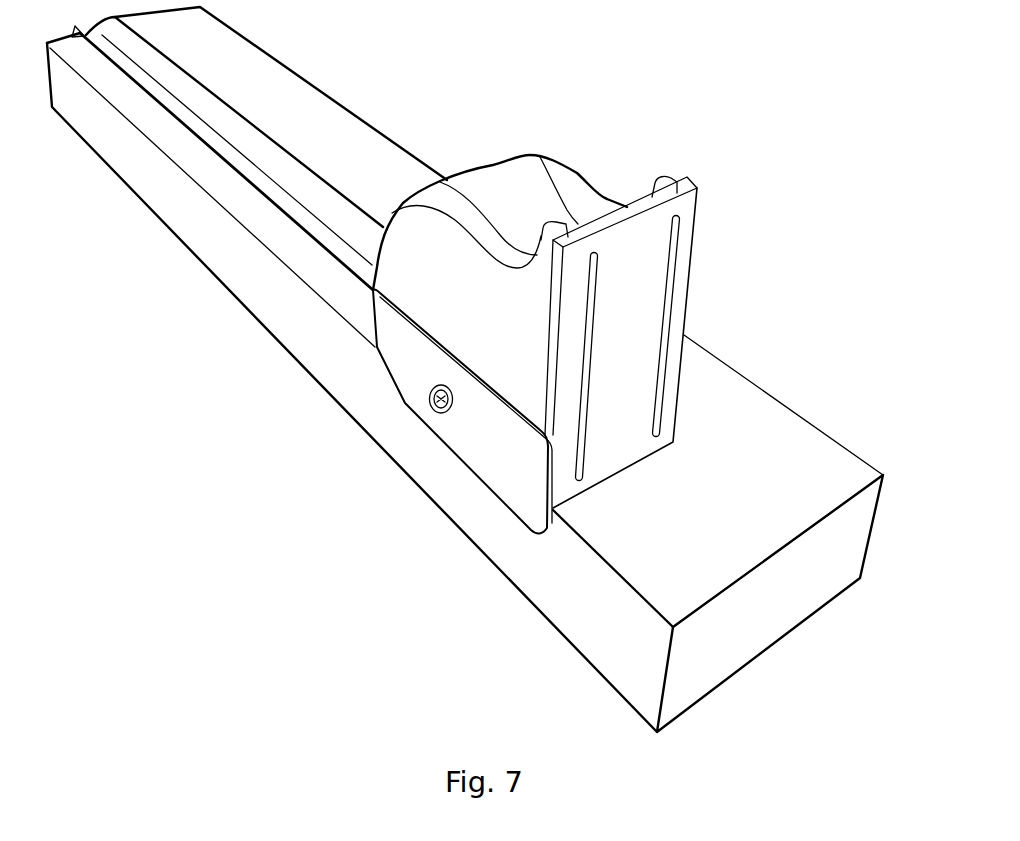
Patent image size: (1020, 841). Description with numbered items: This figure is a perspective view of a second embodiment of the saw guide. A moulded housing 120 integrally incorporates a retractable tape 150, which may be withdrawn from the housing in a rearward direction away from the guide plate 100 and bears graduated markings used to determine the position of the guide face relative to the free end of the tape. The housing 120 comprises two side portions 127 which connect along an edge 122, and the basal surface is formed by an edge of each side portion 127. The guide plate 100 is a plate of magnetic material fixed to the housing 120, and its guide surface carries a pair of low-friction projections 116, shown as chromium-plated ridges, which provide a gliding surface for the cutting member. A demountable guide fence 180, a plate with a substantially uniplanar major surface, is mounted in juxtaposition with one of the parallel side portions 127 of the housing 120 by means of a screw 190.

The guide plate 100 is at (674, 329).
The low-friction projections 116 is at (680, 232).
The housing 120 is at (457, 229).
The edge 122 is at (487, 167).
The side portions 127 is at (540, 155).
The retractable tape 150 is at (295, 158).
The guide fence 180 is at (426, 414).
The screw 190 is at (430, 401).